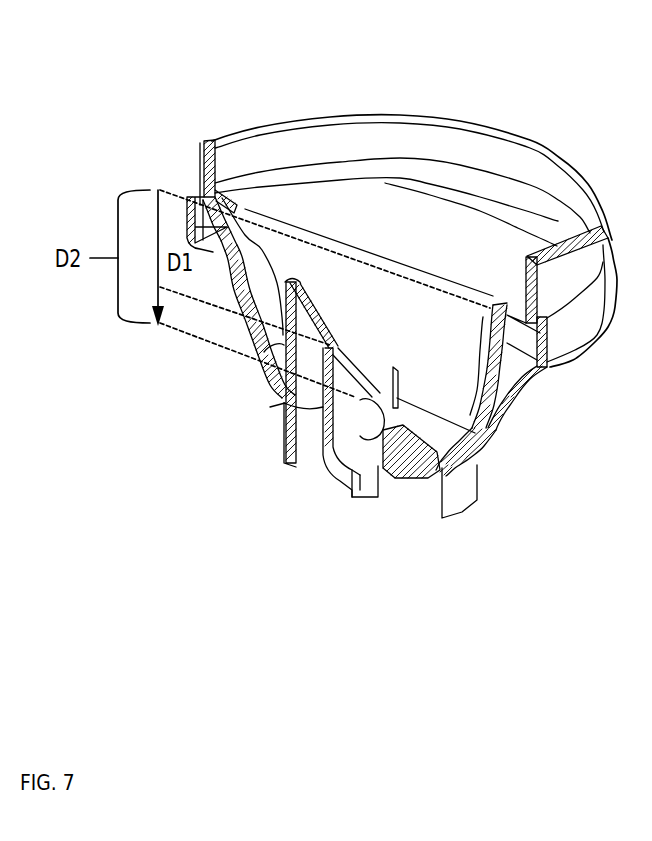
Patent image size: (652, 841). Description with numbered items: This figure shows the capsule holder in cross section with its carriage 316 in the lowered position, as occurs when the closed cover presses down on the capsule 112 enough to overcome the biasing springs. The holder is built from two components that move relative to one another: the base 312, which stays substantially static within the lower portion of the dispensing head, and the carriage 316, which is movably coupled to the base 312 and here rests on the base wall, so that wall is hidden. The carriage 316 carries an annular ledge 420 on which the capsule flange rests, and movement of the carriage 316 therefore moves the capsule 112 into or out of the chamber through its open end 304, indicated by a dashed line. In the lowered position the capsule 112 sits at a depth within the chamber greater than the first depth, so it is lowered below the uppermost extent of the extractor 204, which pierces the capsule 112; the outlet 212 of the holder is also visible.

The capsule 112 is at (399, 223).
The extractor 204 is at (400, 393).
The outlet 212 is at (368, 483).
The open end 304 is at (446, 298).
The base 312 is at (280, 398).
The carriage 316 is at (557, 159).
The ledge 420 is at (228, 197).